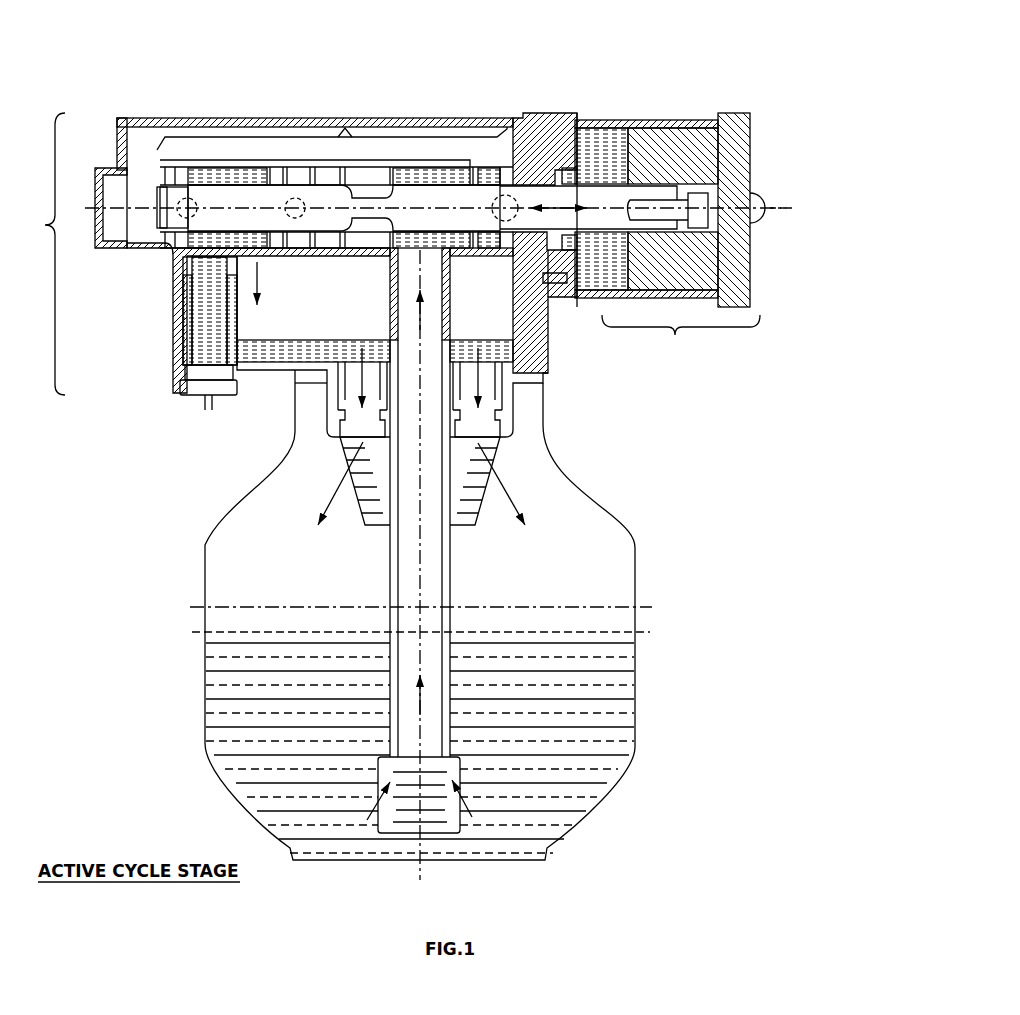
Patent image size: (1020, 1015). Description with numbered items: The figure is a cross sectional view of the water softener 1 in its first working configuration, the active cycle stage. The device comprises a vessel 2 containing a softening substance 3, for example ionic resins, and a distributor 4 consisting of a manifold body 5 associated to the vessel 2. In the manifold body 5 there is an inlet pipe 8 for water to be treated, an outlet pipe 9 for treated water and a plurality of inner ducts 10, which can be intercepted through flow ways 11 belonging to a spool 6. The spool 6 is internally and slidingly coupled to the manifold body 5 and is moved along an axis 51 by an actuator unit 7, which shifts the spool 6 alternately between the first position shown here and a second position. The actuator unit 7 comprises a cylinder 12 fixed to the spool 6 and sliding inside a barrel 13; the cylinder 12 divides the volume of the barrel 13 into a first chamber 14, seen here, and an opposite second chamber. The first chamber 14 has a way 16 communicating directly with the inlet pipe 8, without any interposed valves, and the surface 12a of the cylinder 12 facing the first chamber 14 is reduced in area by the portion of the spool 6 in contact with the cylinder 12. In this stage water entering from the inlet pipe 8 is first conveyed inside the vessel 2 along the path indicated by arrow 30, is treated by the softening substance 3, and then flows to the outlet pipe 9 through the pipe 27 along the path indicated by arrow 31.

The water softener 1 is at (718, 46).
The vessel 2 is at (621, 513).
The softening substance 3 is at (613, 652).
The distributor 4 is at (43, 254).
The manifold body 5 is at (283, 118).
The spool 6 is at (575, 194).
The actuator unit 7 is at (661, 215).
The inlet pipe 8 is at (205, 182).
The outlet pipe 9 is at (580, 183).
The inner ducts 10 is at (349, 115).
The flow ways 11 is at (233, 184).
The cylinder 12 is at (676, 150).
The surface of the cylinder 12a is at (625, 152).
The barrel 13 is at (665, 122).
The first chamber 14 is at (613, 205).
The way 16 is at (573, 293).
The pipe 27 is at (449, 575).
The arrow 30 is at (222, 298).
The arrow 31 is at (426, 320).
The axis 51 is at (722, 210).